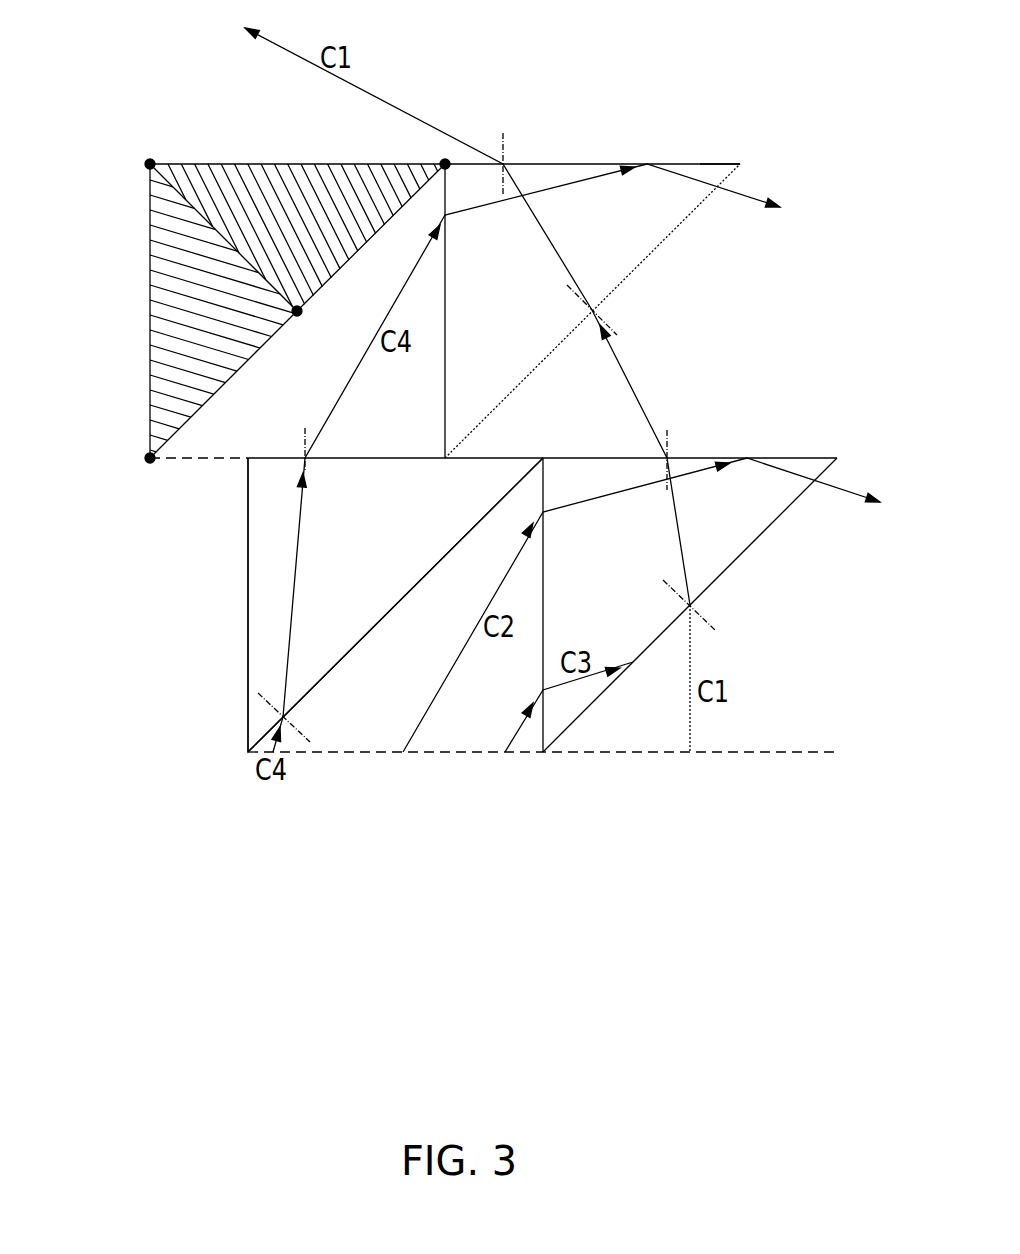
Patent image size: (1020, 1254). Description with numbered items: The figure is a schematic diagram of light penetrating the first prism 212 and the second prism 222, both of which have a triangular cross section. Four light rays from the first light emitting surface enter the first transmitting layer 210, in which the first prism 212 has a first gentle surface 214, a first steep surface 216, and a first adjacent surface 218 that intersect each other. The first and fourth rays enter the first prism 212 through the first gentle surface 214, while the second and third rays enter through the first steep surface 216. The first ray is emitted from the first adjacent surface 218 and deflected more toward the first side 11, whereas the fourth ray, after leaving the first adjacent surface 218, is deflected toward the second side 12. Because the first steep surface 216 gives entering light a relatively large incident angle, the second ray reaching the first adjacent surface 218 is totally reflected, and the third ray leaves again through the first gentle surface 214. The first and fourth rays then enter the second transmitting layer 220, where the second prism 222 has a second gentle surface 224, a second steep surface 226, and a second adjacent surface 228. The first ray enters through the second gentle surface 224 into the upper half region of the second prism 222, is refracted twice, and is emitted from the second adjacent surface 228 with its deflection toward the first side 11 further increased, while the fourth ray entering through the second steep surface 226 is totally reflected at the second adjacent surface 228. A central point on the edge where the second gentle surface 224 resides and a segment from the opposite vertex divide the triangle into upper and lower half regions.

The first side 11 is at (143, 125).
The second side 12 is at (757, 116).
The first transmitting layer 210 is at (127, 595).
The first prism 212 is at (260, 563).
The first gentle surface 214 is at (323, 677).
The first steep surface 216 is at (248, 630).
The first adjacent surface 218 is at (418, 458).
The second transmitting layer 220 is at (152, 67).
The second prism 222 is at (153, 270).
The second gentle surface 224 is at (200, 406).
The second steep surface 226 is at (150, 335).
The second adjacent surface 228 is at (298, 163).